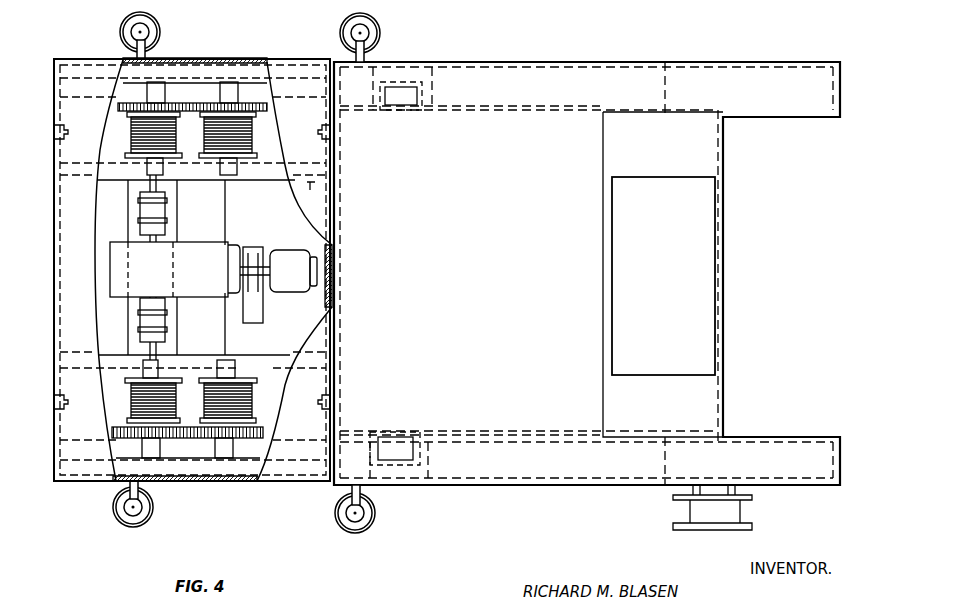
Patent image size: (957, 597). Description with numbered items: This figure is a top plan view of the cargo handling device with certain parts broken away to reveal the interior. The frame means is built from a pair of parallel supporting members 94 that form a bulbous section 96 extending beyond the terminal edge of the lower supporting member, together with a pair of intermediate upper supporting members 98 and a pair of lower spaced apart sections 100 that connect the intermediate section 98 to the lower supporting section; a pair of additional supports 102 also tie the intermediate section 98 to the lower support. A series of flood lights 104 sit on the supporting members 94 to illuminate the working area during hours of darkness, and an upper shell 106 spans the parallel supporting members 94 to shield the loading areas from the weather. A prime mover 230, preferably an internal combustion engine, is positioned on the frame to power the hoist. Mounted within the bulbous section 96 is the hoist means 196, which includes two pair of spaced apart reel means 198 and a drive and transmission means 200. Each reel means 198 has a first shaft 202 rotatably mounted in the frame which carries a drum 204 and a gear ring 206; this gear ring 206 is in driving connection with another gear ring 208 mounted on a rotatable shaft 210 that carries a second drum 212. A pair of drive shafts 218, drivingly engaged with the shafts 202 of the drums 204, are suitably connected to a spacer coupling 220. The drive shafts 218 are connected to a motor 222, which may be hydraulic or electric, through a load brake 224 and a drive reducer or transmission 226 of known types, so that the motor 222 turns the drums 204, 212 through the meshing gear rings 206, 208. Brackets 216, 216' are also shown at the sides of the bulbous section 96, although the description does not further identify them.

The supporting members 94 is at (543, 60).
The bulbous section 96 is at (72, 67).
The intermediate upper supporting members 98 is at (481, 82).
The lower spaced apart sections 100 is at (773, 85).
The additional supports 102 is at (408, 108).
The flood lights 104 is at (121, 30).
The upper shell 106 is at (462, 249).
The hoist means 196 is at (213, 229).
The reel means 198 is at (192, 84).
The drive and transmission means 200 is at (204, 242).
The first shaft 202 is at (155, 87).
The drum 204 is at (135, 137).
The gear ring 206 is at (127, 100).
The gear ring 208 is at (227, 83).
The rotatable shaft 210 is at (192, 507).
The second drum 212 is at (253, 135).
The bracket 216 is at (75, 271).
The bracket 216' is at (306, 272).
The drive shafts 218 is at (147, 186).
The spacer coupling 220 is at (165, 212).
The motor 222 is at (287, 253).
The load brake 224 is at (253, 252).
The drive reducer or transmission 226 is at (115, 263).
The prime mover 230 is at (698, 274).